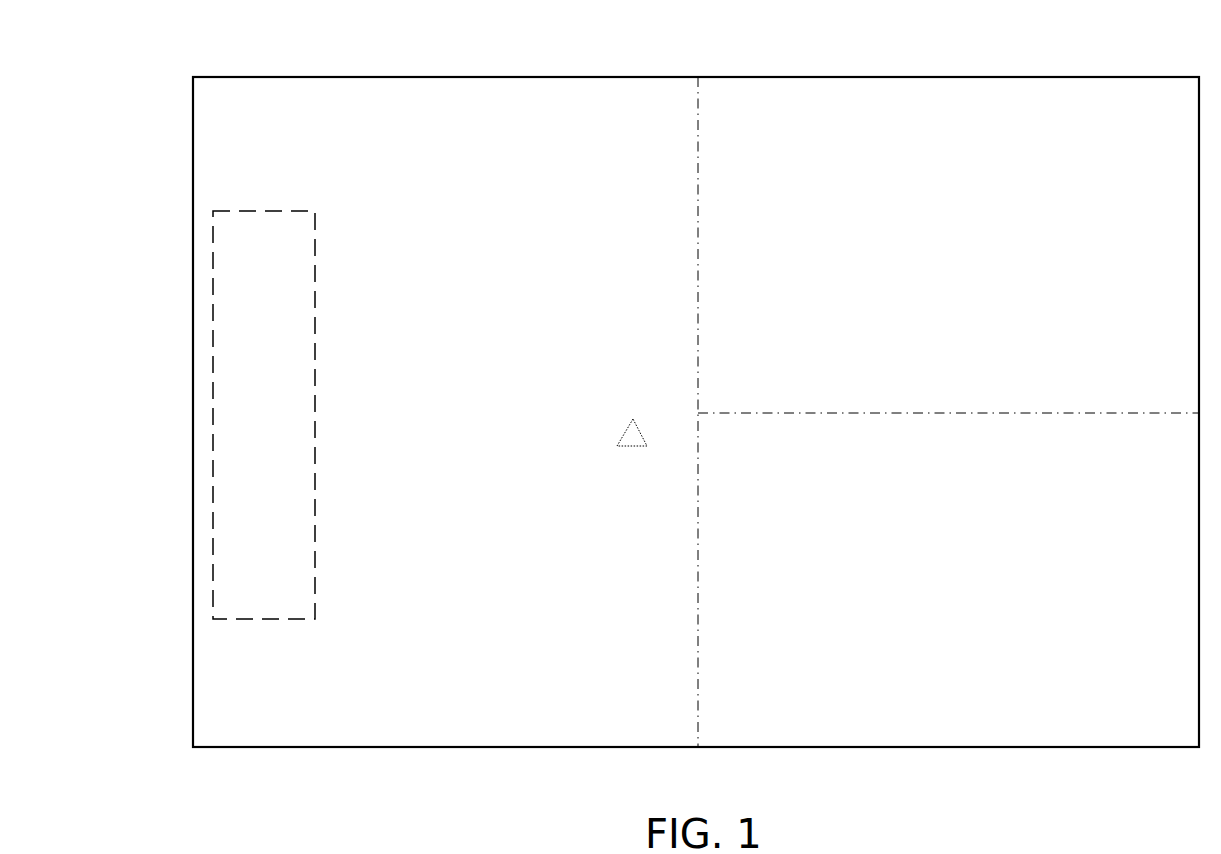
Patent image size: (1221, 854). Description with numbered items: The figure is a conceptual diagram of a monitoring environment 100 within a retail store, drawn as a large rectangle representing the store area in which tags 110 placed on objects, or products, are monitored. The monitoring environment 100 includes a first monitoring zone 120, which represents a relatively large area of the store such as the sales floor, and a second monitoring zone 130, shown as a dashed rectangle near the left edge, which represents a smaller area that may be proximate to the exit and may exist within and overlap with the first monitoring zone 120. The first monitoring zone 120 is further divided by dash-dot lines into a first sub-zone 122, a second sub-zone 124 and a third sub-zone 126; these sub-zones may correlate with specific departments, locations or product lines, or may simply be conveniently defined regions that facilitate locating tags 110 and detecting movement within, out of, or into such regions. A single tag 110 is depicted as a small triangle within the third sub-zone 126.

The monitoring environment 100 is at (650, 381).
The tag 110 is at (597, 420).
The first monitoring zone 120 is at (696, 769).
The first sub-zone 122 is at (948, 395).
The second sub-zone 124 is at (948, 742).
The third sub-zone 126 is at (445, 69).
The second monitoring zone 130 is at (218, 394).